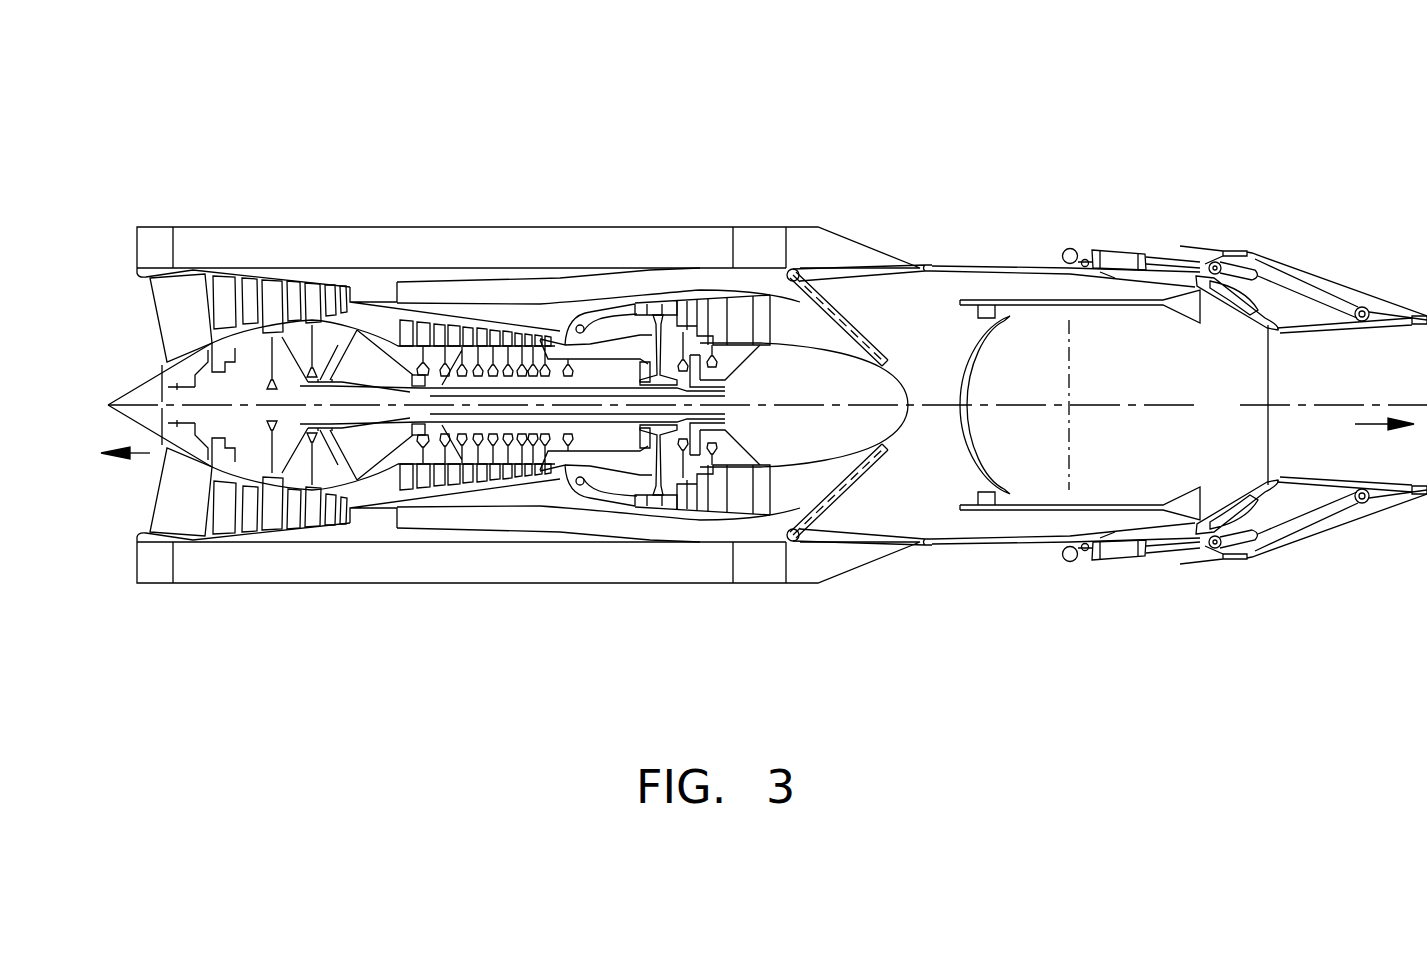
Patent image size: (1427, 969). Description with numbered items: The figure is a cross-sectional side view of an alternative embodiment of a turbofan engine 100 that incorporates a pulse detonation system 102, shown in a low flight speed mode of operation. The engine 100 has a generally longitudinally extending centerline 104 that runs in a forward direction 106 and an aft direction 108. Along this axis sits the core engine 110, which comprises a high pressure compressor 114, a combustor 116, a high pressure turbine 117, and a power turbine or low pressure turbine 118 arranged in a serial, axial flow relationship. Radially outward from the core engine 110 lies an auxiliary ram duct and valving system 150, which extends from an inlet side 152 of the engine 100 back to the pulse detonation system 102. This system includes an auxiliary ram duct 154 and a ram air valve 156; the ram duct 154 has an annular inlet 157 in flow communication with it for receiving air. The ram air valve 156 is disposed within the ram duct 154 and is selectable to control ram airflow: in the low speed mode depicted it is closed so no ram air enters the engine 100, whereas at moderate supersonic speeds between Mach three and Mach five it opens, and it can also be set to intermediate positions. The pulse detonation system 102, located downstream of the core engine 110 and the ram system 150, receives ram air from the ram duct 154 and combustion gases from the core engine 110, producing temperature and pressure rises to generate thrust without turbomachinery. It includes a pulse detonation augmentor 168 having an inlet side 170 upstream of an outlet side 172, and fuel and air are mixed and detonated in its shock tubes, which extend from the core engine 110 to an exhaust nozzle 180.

The turbofan engine 100 is at (239, 112).
The pulse detonation system 102 is at (1021, 205).
The centerline 104 is at (162, 358).
The forward direction 106 is at (130, 453).
The aft direction 108 is at (1375, 426).
The core engine 110 is at (490, 510).
The high pressure compressor 114 is at (479, 300).
The combustor 116 is at (597, 320).
The high pressure turbine 117 is at (657, 300).
The low pressure turbine 118 is at (711, 345).
The auxiliary ram duct and valving system 150 is at (818, 608).
The inlet side 152 is at (131, 532).
The auxiliary ram duct 154 is at (262, 585).
The ram air valve 156 is at (868, 548).
The inlet 157 is at (113, 226).
The pulse detonation augmentor 168 is at (1022, 300).
The inlet side 170 is at (956, 476).
The outlet side 172 is at (1203, 312).
The exhaust nozzle 180 is at (1388, 462).